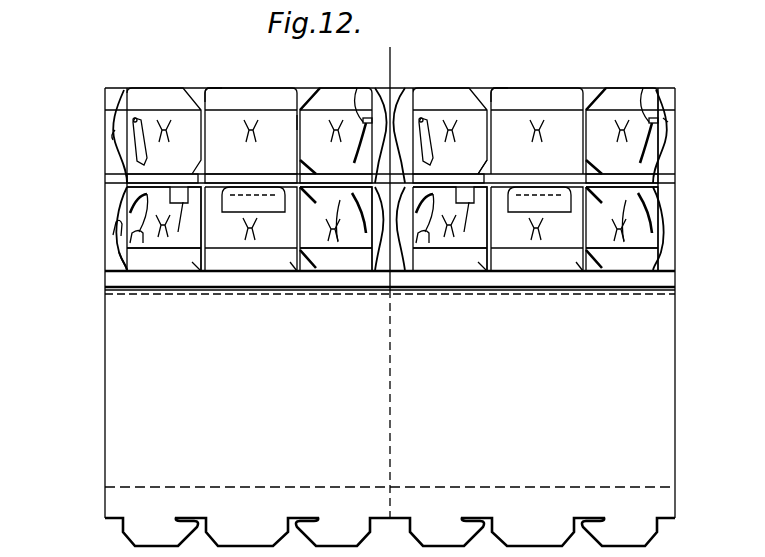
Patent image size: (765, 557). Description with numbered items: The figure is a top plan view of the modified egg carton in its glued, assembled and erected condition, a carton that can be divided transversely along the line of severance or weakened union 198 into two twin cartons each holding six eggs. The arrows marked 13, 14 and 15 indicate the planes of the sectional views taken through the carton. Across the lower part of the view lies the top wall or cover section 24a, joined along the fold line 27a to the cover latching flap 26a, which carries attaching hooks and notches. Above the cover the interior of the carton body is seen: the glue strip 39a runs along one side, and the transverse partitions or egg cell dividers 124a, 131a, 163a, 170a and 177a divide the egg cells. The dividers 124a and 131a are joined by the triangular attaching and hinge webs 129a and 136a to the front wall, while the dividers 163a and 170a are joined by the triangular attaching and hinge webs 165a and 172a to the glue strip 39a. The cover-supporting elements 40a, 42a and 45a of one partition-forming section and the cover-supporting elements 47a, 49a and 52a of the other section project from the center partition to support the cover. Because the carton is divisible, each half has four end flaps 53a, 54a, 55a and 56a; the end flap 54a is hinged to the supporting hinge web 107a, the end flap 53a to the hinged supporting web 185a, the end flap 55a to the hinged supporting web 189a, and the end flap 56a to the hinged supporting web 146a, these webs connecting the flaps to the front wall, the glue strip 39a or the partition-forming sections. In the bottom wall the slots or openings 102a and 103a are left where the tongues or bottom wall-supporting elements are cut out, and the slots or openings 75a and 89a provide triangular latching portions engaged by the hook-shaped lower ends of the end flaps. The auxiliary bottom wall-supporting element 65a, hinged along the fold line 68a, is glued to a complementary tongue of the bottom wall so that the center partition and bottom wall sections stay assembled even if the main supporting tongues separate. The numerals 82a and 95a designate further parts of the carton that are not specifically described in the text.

The section line 13- 13 is at (713, 203).
The section line 14- 14 is at (100, 323).
The carton blank 15 is at (371, 322).
The top wall or cover section 24a is at (655, 413).
The cover latching strip section or flap 26a is at (655, 507).
The fold line 27a is at (660, 488).
The glue strip 39a is at (620, 296).
The cover-supporting element 40a is at (608, 176).
The cover-supporting element 42a is at (518, 182).
The cover-supporting element 45a is at (439, 176).
The cover-supporting element 47a is at (650, 177).
The cover-supporting element 49a is at (224, 176).
The cover-supporting element 52a is at (441, 187).
The end wall or end flap 53a is at (664, 121).
The end wall or end flap 54a is at (417, 125).
The end wall or end flap 55a is at (662, 227).
The end wall or end flap 56a is at (118, 227).
The auxiliary bottom wall-supporting element 65a is at (557, 214).
The fold line 68a is at (256, 186).
The slot or opening 75a is at (307, 229).
The cell 82a is at (700, 246).
The slot or opening 89a is at (424, 122).
The cam blade 95a is at (646, 103).
The opening or slot 102a is at (598, 215).
The opening or slot 103a is at (320, 185).
The supporting hinge web 107a is at (408, 100).
The transverse partition or egg cell divider 124a is at (500, 128).
The attaching and hinge web 129a is at (500, 88).
The transverse partition or egg cell divider 131a is at (580, 137).
The attaching and hinge web 136a is at (595, 96).
The hinged supporting web 146a is at (399, 268).
The transverse partition or egg cell divider 163a is at (537, 229).
The attaching and hinge web 165a is at (483, 268).
The transverse partition or egg cell divider 170a is at (588, 231).
The attaching and hinge web 172a is at (585, 268).
The transverse partition or egg cell divider 177a is at (297, 273).
The hinged supporting web 185a is at (670, 137).
The hinged supporting web 189a is at (658, 253).
The line of severance or weakened union 198 is at (392, 430).